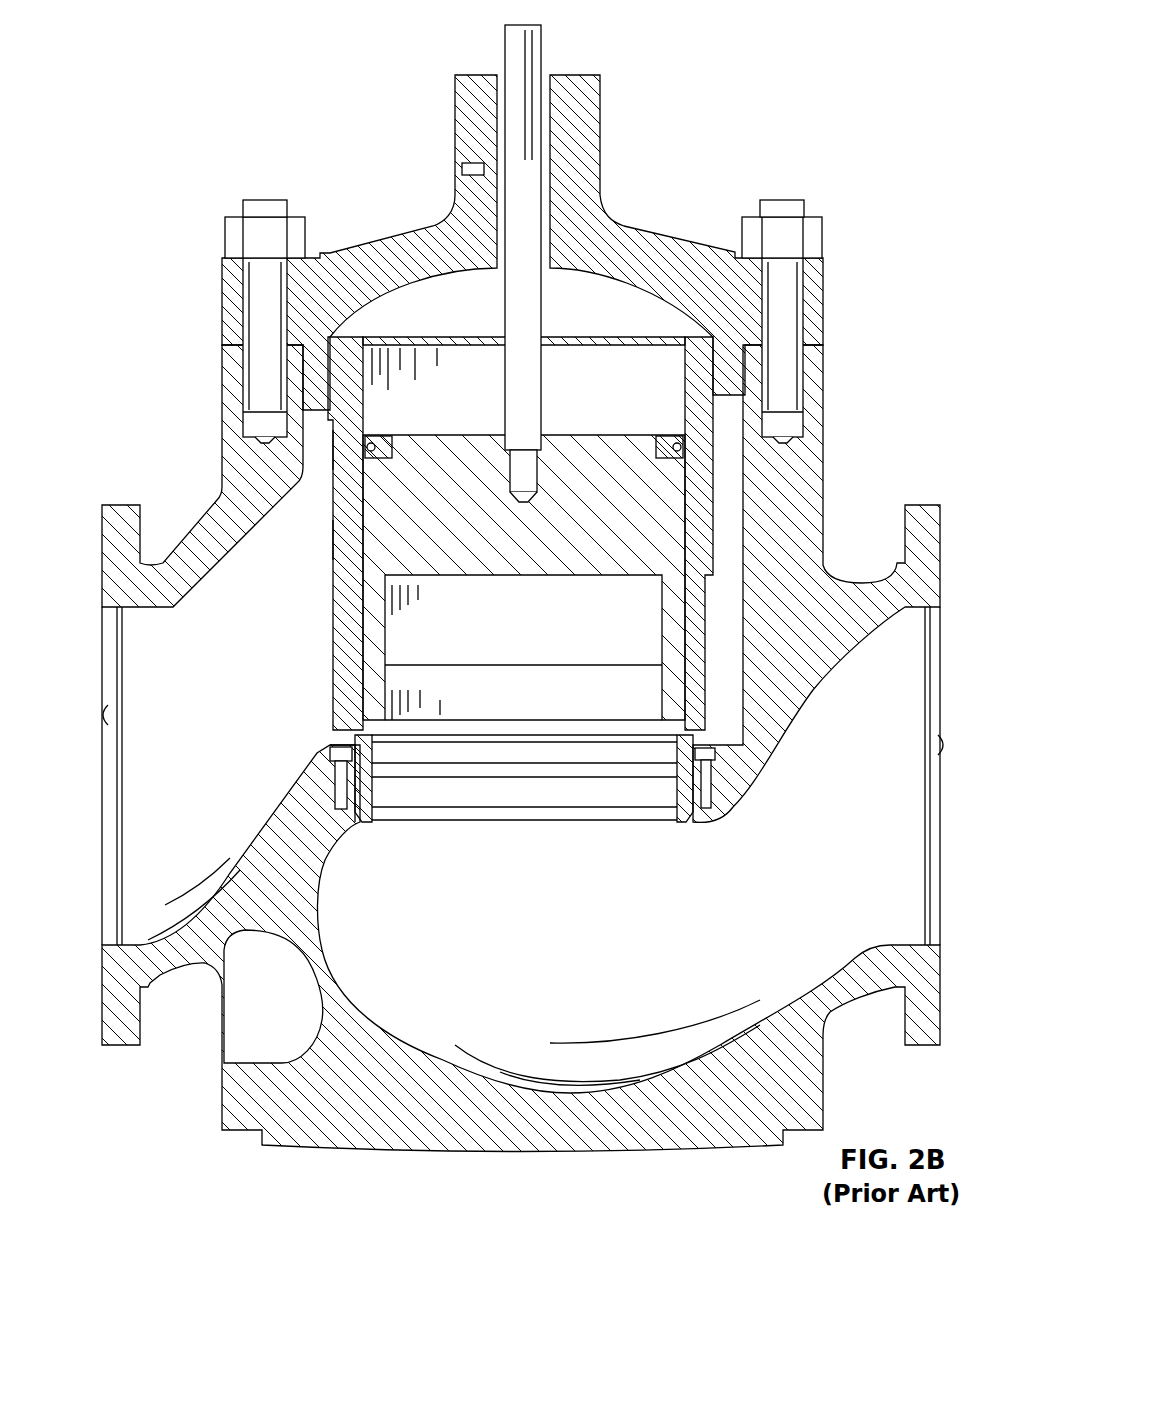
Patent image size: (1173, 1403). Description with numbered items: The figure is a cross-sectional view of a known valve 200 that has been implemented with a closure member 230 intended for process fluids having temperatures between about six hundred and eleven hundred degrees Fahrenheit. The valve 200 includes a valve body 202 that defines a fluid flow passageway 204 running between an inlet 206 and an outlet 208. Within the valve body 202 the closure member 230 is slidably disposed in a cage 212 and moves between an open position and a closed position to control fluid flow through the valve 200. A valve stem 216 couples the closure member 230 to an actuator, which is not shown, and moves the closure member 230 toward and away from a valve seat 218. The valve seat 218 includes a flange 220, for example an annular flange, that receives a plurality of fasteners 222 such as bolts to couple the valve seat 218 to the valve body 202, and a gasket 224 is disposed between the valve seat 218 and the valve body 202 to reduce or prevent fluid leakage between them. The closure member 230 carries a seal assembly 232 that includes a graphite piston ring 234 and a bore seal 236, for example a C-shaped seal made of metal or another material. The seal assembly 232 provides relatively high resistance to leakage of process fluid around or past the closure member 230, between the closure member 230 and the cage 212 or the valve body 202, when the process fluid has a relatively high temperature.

The valve 200 is at (787, 93).
The valve body 202 is at (830, 1048).
The fluid flow passageway 204 is at (607, 1006).
The inlet 206 is at (927, 745).
The outlet 208 is at (140, 725).
The cage 212 is at (700, 497).
The valve stem 216 is at (543, 52).
The valve seat 218 is at (683, 787).
The flange 220 is at (718, 769).
The fasteners 222 is at (330, 750).
The gasket 224 is at (356, 815).
The closure member 230 is at (588, 435).
The seal assembly 232 is at (354, 445).
The graphite piston ring 234 is at (388, 438).
The bore seal 236 is at (333, 538).